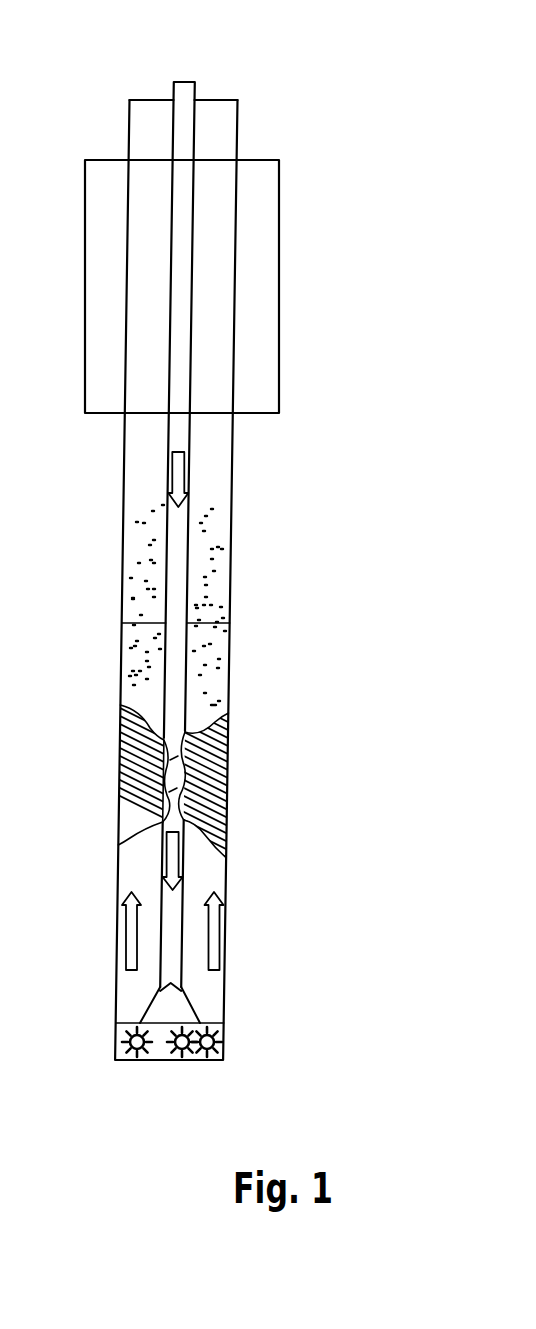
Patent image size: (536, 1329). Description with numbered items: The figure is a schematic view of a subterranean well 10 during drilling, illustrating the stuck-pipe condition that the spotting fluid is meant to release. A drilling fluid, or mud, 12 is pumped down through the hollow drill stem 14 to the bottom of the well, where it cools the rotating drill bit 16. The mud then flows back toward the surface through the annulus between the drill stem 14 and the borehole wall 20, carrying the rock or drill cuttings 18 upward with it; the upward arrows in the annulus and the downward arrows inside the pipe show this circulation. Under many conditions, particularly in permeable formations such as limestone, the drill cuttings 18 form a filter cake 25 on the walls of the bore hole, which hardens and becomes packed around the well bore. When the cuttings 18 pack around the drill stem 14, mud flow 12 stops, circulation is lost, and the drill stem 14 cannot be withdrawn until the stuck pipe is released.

The subterranean well 10 is at (233, 878).
The drilling fluid 12 is at (188, 477).
The drill stem 14 is at (183, 98).
The drill bit 16 is at (168, 1015).
The drill cuttings 18 is at (207, 658).
The borehole wall 20 is at (121, 597).
The filter cake 25 is at (165, 789).